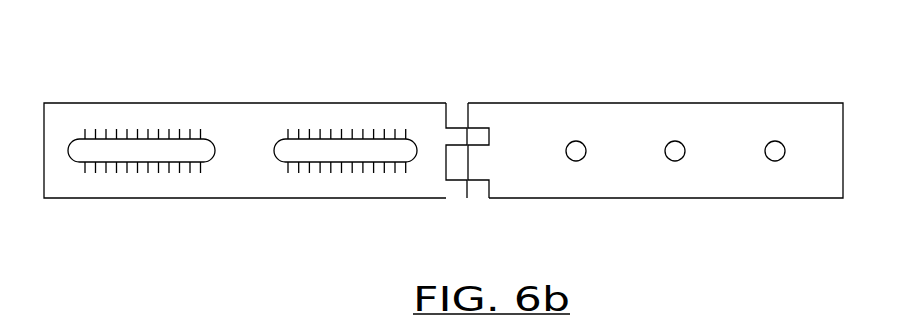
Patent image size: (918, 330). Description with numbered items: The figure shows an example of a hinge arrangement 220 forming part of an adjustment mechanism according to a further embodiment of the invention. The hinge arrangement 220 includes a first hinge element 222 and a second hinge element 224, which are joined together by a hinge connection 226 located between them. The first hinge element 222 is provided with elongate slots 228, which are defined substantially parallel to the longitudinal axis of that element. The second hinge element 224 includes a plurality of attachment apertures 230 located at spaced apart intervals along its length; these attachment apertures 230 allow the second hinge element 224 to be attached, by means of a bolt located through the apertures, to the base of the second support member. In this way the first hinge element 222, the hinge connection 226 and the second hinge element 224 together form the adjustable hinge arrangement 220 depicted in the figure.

The hinge arrangement 220 is at (443, 141).
The first hinge element 222 is at (343, 102).
The second hinge element 224 is at (640, 103).
The hinge connection 226 is at (457, 124).
The elongate slots 228 is at (317, 147).
The attachment apertures 230 is at (574, 141).